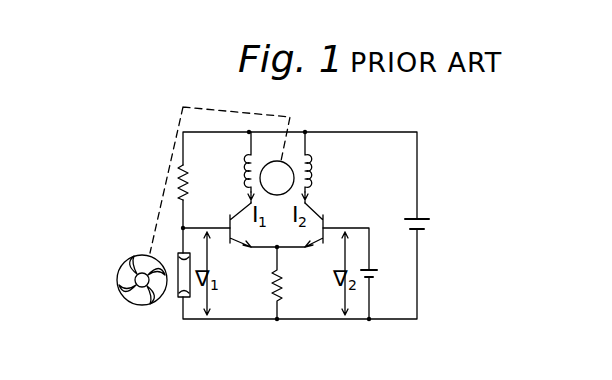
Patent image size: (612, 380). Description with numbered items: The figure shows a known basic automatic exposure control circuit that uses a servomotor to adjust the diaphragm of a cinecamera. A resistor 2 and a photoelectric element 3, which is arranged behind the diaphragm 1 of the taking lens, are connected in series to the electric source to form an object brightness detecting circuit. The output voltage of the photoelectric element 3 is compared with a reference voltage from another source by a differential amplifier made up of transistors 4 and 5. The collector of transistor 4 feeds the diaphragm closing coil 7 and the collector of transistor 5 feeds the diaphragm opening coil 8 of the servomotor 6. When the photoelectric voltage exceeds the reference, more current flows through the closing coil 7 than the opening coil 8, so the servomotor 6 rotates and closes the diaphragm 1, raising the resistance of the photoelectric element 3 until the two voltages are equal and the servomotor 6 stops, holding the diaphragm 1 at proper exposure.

The diaphragm 1 is at (133, 303).
The resistor 2 is at (190, 181).
The photoelectric element 3 is at (176, 292).
The transistor 4 is at (242, 245).
The transistor 5 is at (321, 240).
The servomotor 6 is at (281, 161).
The diaphragm closing coil 7 is at (246, 165).
The diaphragm opening coil 8 is at (311, 171).